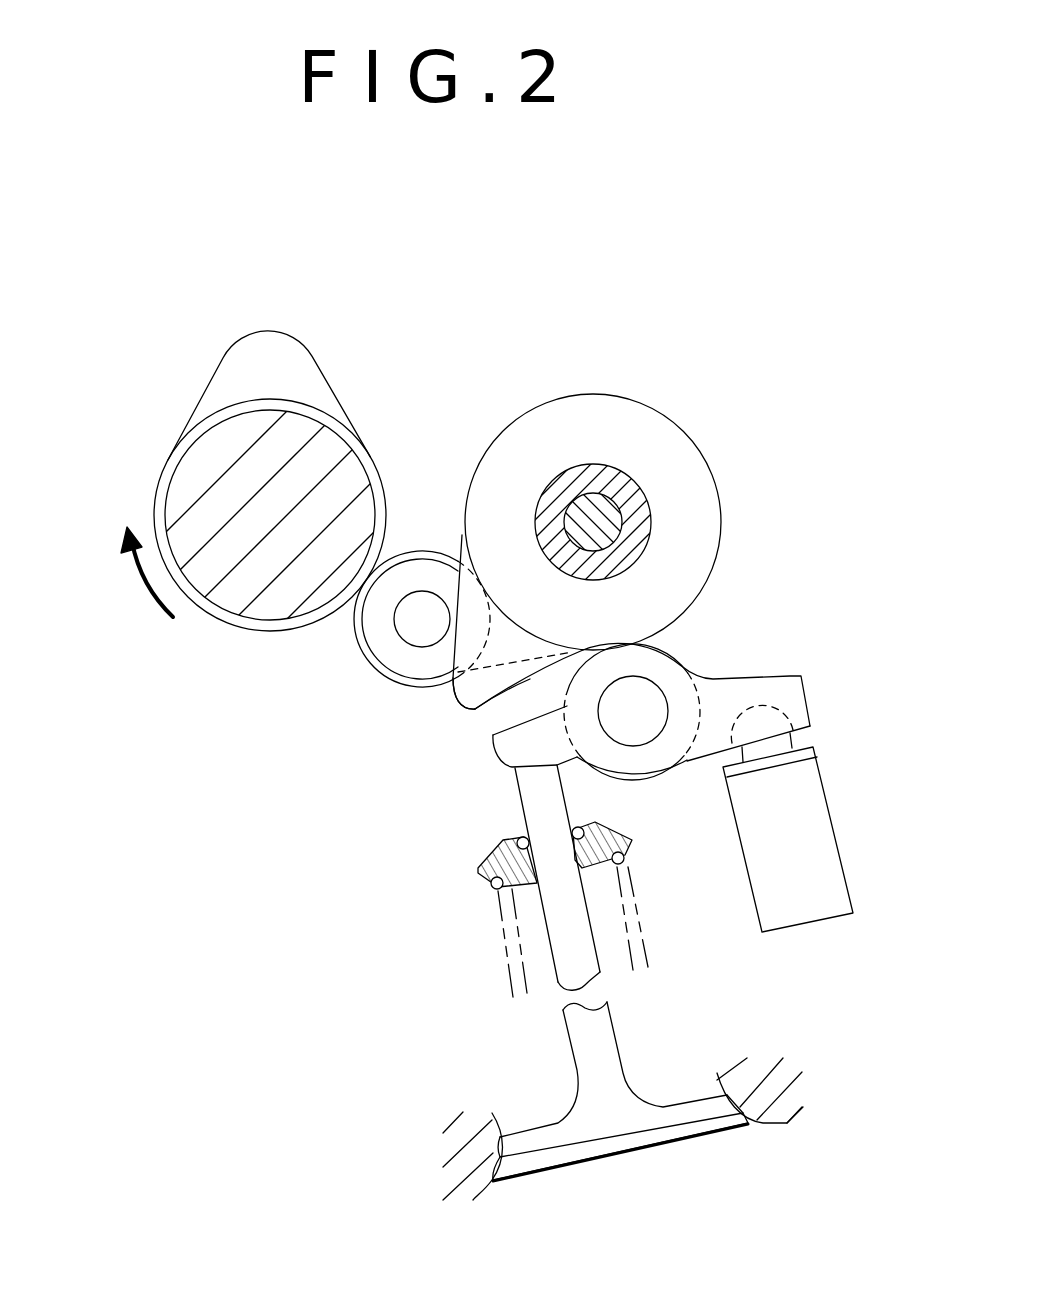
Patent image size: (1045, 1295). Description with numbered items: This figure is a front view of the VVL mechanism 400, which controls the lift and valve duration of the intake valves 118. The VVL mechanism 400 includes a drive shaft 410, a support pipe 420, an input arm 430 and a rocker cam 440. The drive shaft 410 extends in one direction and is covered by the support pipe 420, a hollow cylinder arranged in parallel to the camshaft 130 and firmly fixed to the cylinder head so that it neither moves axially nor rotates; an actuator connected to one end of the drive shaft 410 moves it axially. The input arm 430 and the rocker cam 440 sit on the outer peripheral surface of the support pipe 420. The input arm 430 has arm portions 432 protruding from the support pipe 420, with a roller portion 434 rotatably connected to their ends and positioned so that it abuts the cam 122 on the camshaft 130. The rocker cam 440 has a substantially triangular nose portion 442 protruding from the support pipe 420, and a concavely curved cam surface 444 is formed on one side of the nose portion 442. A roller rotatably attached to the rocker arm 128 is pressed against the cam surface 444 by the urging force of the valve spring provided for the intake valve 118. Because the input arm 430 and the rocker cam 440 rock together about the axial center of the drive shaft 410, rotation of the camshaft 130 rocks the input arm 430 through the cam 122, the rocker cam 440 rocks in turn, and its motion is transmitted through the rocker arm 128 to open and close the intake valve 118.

The cam 122 is at (242, 372).
The camshaft 130 is at (207, 458).
The arm portions 432 is at (415, 577).
The roller portion 434 is at (367, 653).
The input arm 430 is at (458, 535).
The nose portion 442 is at (468, 695).
The cam surface 444 is at (495, 698).
The rocker cam 440 is at (673, 452).
The support pipe 420 is at (653, 520).
The drive shaft 410 is at (593, 492).
The VVL mechanism 400 is at (673, 372).
The rocker arm 128 is at (787, 673).
The intake valve 118 is at (527, 812).